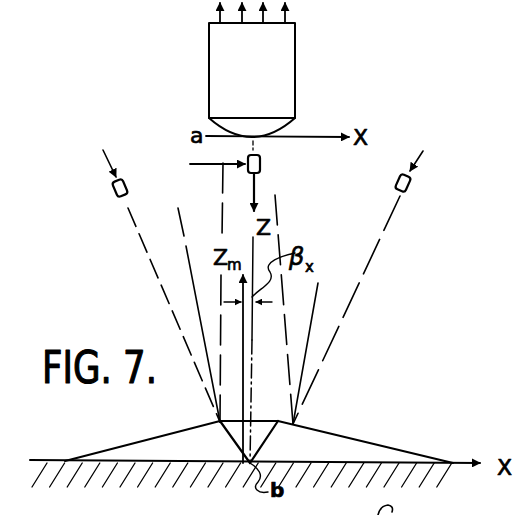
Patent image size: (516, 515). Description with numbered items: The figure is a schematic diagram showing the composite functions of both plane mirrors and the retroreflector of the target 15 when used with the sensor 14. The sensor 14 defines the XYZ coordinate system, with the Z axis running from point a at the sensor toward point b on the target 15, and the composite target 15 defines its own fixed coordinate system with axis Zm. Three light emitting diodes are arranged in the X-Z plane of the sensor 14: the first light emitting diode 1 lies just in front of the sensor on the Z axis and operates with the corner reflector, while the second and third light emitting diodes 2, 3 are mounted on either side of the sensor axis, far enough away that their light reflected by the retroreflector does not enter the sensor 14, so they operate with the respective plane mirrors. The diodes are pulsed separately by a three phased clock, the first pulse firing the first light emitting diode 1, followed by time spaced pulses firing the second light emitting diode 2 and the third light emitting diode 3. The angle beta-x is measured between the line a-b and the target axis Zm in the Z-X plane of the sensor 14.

The sensor 14 is at (287, 80).
The target 15 is at (358, 421).
The light emitting diode LED1 1 is at (246, 287).
The light emitting diode LED2 2 is at (143, 273).
The light emitting diode LED3 3 is at (377, 279).